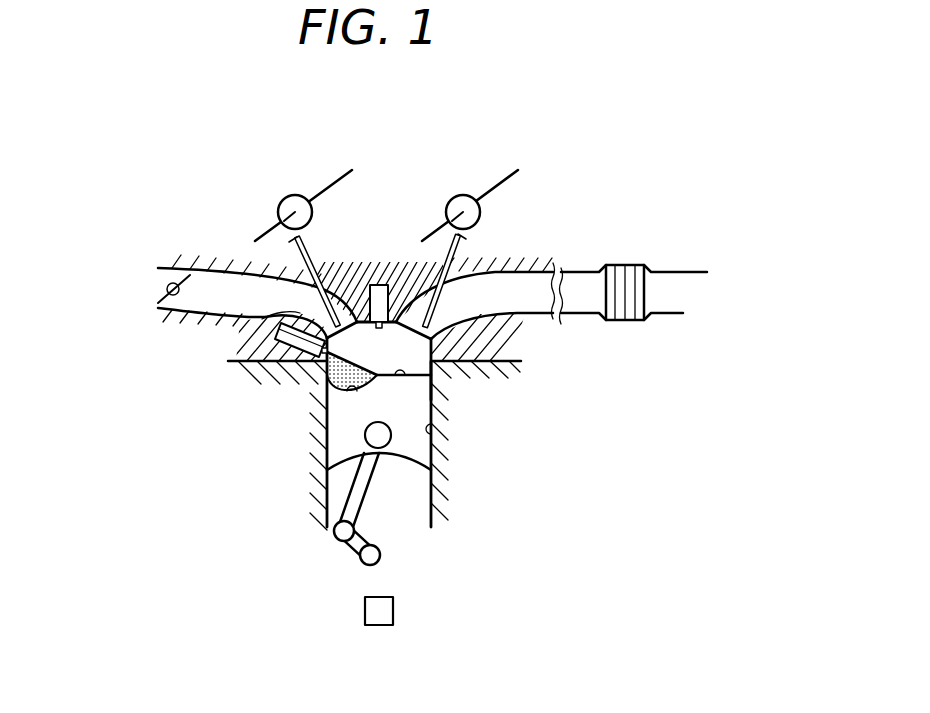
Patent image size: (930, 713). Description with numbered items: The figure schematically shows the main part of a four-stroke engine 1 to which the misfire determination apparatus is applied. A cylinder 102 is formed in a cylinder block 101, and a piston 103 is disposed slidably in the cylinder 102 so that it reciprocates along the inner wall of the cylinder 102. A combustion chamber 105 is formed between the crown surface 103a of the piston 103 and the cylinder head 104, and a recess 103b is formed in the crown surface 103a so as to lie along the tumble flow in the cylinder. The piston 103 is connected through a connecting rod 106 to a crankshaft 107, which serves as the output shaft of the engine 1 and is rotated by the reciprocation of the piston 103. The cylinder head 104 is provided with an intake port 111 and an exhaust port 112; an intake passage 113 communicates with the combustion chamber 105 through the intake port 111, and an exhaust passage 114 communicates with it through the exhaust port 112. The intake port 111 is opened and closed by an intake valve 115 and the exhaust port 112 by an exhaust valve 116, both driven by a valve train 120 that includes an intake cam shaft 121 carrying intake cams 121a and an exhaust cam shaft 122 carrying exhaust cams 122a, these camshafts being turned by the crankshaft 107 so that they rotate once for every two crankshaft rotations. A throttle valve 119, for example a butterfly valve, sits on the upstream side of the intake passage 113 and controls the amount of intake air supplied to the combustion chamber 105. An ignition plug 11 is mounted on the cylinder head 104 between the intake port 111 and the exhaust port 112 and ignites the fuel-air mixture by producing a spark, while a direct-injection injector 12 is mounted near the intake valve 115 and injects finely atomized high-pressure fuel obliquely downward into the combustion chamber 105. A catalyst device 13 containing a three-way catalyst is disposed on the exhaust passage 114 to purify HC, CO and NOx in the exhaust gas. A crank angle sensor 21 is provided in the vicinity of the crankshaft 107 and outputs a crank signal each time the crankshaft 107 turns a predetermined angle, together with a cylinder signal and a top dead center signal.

The engine 1 is at (575, 138).
The ignition plug 11 is at (380, 283).
The injector 12 is at (288, 364).
The catalyst device 13 is at (631, 265).
The crank angle sensor 21 is at (393, 611).
The cylinder block 101 is at (315, 472).
The cylinder 102 is at (433, 427).
The piston 103 is at (440, 443).
The crown surface 103a is at (441, 397).
The recess 103b is at (347, 391).
The cylinder head 104 is at (478, 343).
The combustion chamber 105 is at (466, 378).
The connecting rod 106 is at (366, 503).
The crankshaft 107 is at (360, 566).
The intake port 111 is at (352, 313).
The exhaust port 112 is at (410, 313).
The intake passage 113 is at (237, 288).
The exhaust passage 114 is at (515, 288).
The intake valve 115 is at (262, 319).
The exhaust valve 116 is at (467, 244).
The throttle valve 119 is at (160, 303).
The valve train 120 is at (428, 150).
The intake cam shaft 121 is at (258, 242).
The intake cam 121a is at (281, 199).
The exhaust cam shaft 122 is at (488, 199).
The exhaust cam 122a is at (460, 195).